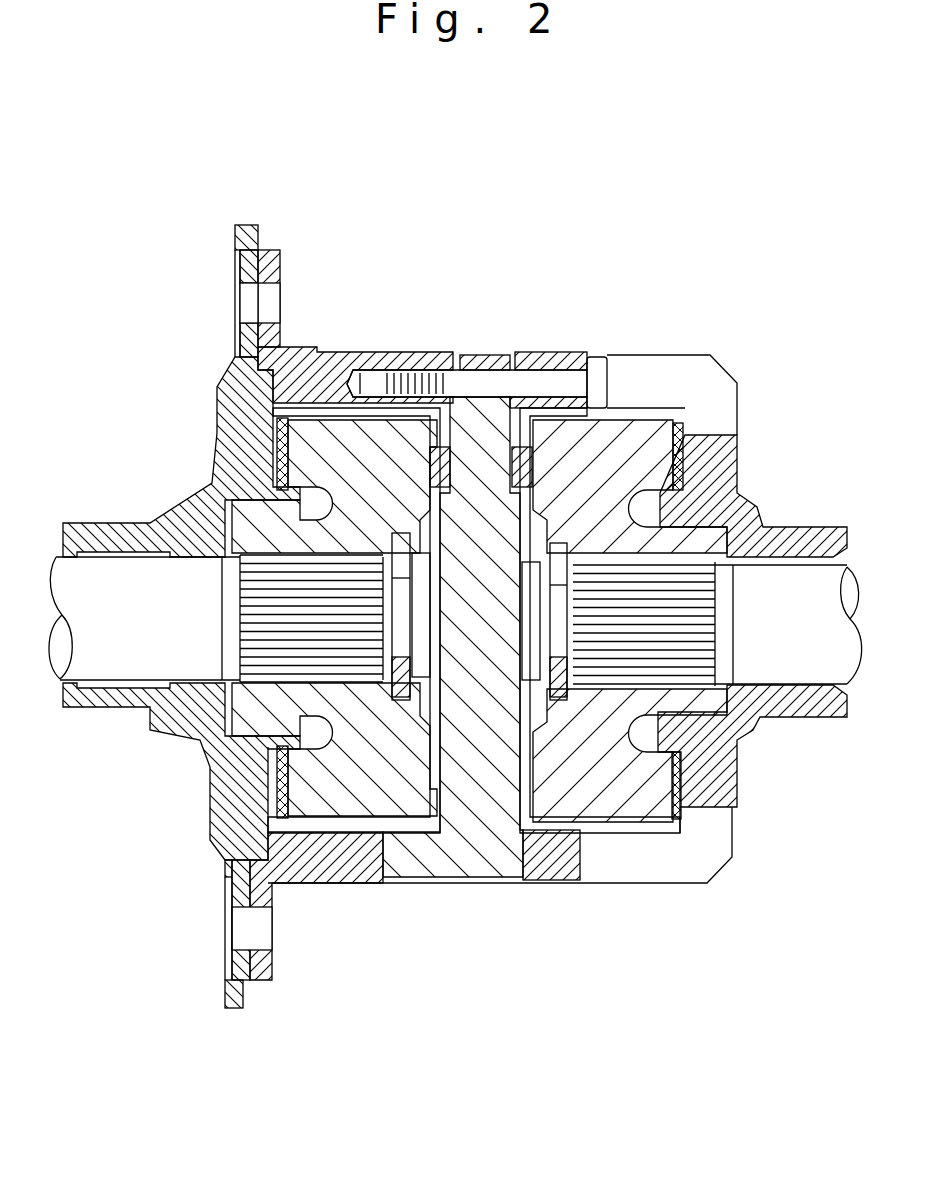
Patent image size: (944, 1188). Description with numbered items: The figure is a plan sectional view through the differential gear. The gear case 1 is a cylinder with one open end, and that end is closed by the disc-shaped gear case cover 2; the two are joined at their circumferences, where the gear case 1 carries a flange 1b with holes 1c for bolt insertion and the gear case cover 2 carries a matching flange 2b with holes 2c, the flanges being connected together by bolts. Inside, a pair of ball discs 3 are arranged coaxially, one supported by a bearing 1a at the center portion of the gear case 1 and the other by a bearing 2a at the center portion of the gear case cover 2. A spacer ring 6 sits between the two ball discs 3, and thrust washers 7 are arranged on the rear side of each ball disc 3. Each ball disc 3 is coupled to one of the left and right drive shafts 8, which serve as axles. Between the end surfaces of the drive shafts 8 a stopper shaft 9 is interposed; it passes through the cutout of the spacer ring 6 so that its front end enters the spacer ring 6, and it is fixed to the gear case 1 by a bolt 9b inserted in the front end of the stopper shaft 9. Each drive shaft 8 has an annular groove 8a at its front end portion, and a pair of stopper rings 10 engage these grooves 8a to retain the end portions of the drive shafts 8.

The gear case 1 is at (657, 352).
The bearing 1a is at (690, 717).
The flange 1b is at (282, 258).
The holes for bolt insertion 1c is at (272, 302).
The gear case cover 2 is at (218, 405).
The bearing 2a is at (240, 745).
The flange 2b is at (235, 240).
The holes for bolt insertion 2c is at (253, 304).
The ball discs 3 is at (333, 437).
The spacer ring 6 is at (555, 468).
The thrust washers 7 is at (282, 452).
The drive shafts 8 is at (95, 577).
The annular groove 8a is at (560, 638).
The stopper shaft 9 is at (480, 845).
The bolt 9b is at (540, 385).
The stopper rings 10 is at (392, 690).